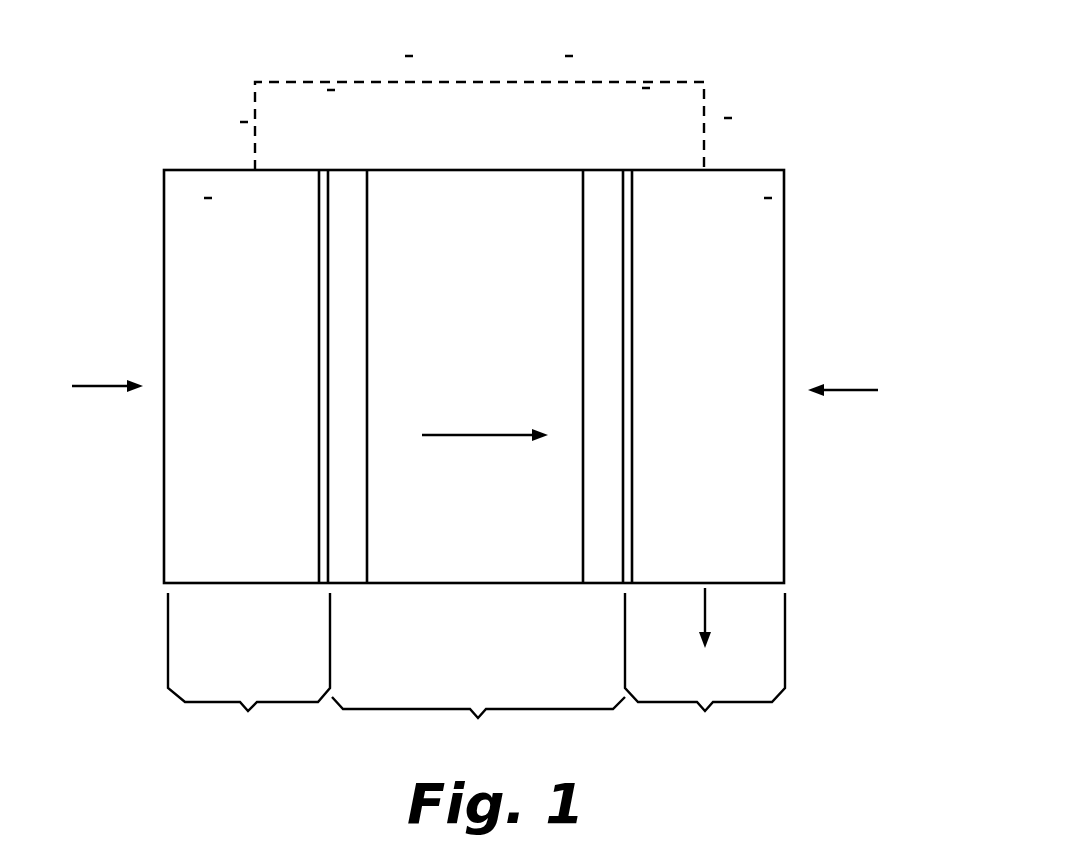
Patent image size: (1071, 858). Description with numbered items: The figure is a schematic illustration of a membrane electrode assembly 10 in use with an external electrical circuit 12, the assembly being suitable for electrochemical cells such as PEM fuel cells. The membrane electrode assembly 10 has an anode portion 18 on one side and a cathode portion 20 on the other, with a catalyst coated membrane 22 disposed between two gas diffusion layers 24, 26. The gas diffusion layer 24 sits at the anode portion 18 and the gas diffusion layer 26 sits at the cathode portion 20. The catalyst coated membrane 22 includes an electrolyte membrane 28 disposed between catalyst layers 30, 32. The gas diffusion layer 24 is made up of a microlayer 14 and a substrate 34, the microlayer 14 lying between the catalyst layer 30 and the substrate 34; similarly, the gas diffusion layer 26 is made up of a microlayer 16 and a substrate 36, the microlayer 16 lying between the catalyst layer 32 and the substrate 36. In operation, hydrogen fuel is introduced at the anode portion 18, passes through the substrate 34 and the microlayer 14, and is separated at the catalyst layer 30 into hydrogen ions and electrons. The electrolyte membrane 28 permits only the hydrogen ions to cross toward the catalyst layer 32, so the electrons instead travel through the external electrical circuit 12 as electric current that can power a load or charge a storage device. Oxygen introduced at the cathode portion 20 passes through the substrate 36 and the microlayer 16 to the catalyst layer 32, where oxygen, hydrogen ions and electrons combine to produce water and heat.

The membrane electrode assembly 10 is at (148, 155).
The external electrical circuit 12 is at (680, 62).
The microlayer 14 is at (320, 264).
The microlayer 16 is at (632, 262).
The anode portion 18 is at (133, 490).
The cathode portion 20 is at (801, 500).
The catalyst coated membrane 22 is at (478, 724).
The gas diffusion layer 24 is at (249, 670).
The gas diffusion layer 26 is at (705, 669).
The electrolyte membrane 28 is at (462, 565).
The catalyst layer 30 is at (358, 262).
The catalyst layer 32 is at (592, 265).
The substrate 34 is at (216, 565).
The substrate 36 is at (689, 565).